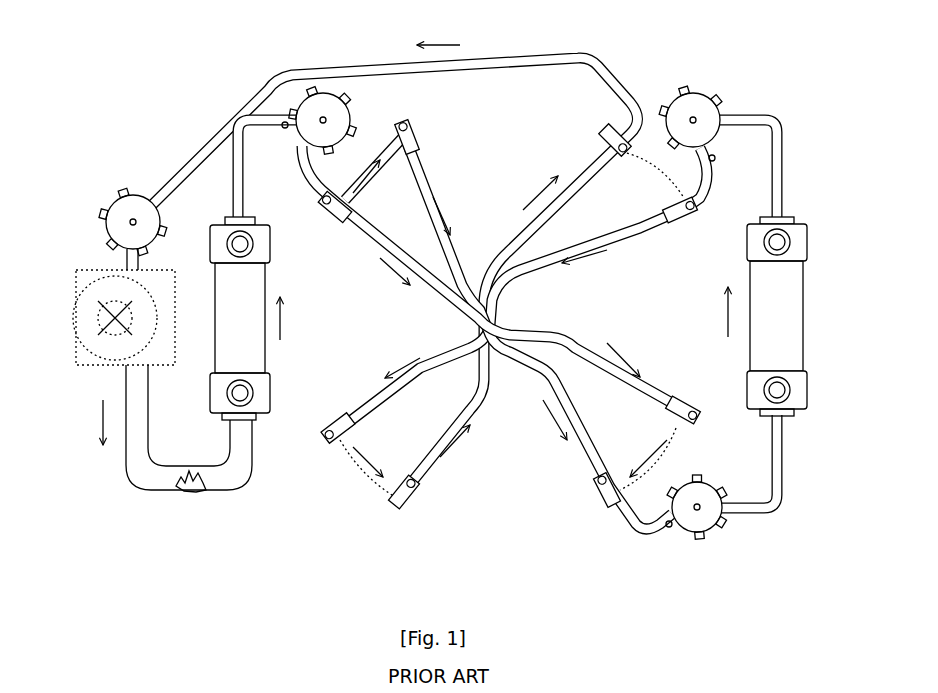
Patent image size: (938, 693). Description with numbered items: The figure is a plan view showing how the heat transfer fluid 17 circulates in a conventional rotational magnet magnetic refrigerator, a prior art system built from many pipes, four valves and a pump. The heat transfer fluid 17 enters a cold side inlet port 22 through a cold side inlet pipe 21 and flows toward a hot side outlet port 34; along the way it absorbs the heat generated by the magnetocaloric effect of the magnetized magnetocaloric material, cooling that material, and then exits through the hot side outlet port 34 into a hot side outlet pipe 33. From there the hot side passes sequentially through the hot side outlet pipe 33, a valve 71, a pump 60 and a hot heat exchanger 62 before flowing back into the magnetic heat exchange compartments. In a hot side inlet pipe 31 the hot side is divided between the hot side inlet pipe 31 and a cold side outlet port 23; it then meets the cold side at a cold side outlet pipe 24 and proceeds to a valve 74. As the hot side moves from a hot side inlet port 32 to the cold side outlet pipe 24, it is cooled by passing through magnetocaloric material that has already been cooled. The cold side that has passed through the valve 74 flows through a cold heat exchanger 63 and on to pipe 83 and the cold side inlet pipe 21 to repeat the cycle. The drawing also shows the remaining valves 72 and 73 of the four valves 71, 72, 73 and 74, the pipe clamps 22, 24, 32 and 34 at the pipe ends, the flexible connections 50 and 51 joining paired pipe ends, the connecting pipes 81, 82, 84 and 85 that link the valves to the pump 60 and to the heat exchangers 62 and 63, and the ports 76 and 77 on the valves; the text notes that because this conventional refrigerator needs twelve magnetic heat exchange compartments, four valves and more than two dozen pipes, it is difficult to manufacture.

The heat transfer fluid 17 is at (190, 483).
The cold side inlet pipe 21 is at (712, 183).
The cold side inlet port 22 is at (697, 202).
The cold side outlet port 23 is at (413, 180).
The cold side outlet pipe 24 is at (400, 125).
The hot side inlet pipe 31 is at (292, 153).
The hot side inlet port 32 is at (322, 200).
The hot side outlet pipe 33 is at (590, 170).
The hot side outlet port 34 is at (620, 133).
The flexible hose 50 is at (700, 170).
The flexible hose 51 is at (378, 140).
The pump 60 is at (93, 297).
The hot heat exchanger 62 is at (223, 340).
The cold heat exchanger 63 is at (798, 317).
The valve 71 is at (117, 212).
The valve 72 is at (328, 95).
The valve 73 is at (694, 110).
The valve 74 is at (700, 523).
The valve port 76 is at (300, 92).
The valve port 77 is at (157, 202).
The pipe 81 is at (127, 258).
The pipe 82 is at (247, 120).
The pipe 83 is at (733, 120).
The pipe 84 is at (785, 432).
The pipe 85 is at (133, 382).